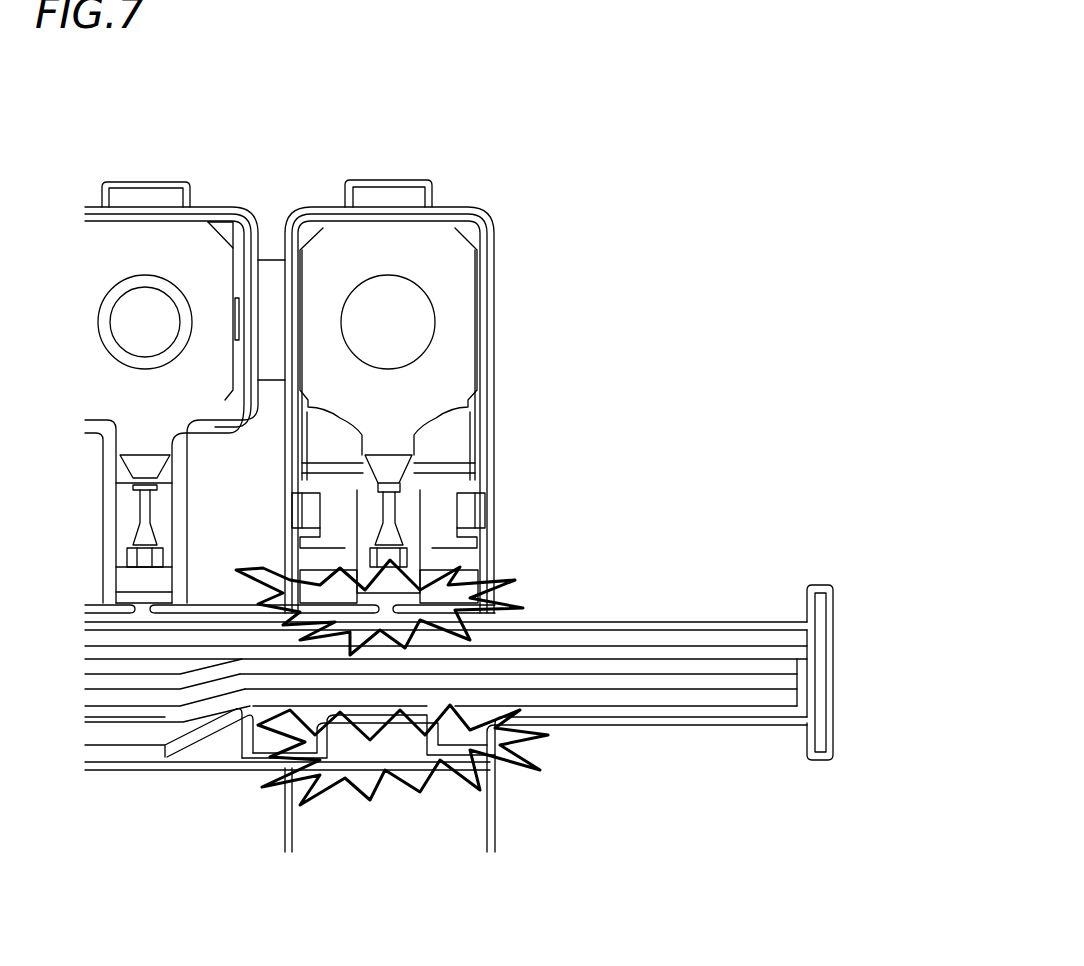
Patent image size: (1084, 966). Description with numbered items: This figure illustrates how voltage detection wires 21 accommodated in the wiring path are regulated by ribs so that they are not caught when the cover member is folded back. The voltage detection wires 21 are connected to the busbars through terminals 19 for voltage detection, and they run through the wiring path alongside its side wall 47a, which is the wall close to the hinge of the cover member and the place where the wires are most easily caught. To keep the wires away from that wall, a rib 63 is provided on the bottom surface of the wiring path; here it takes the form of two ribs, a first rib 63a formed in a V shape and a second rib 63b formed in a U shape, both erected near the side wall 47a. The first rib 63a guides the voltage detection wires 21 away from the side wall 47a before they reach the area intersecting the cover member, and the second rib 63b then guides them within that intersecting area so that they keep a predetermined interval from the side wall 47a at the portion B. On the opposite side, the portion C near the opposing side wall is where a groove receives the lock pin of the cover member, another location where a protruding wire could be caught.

The terminal for voltage detection 19 is at (330, 245).
The voltage detection wire 21 is at (684, 624).
The rib 63 is at (446, 828).
The first rib 63a is at (212, 760).
The second rib 63b is at (160, 827).
The side wall 47a is at (407, 780).
The portion B is at (530, 778).
The portion C is at (500, 593).